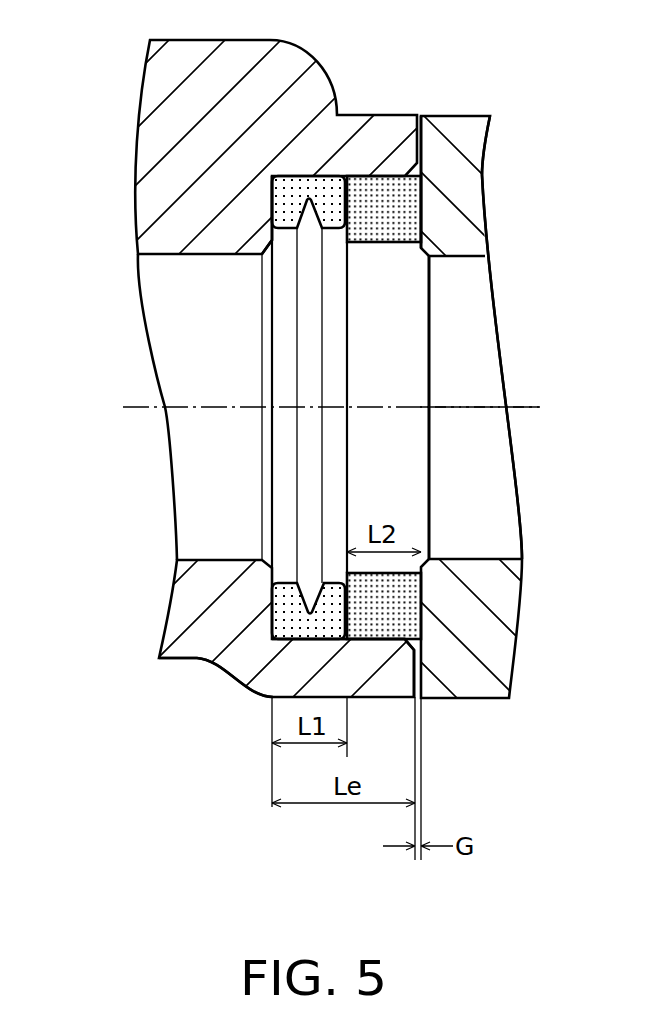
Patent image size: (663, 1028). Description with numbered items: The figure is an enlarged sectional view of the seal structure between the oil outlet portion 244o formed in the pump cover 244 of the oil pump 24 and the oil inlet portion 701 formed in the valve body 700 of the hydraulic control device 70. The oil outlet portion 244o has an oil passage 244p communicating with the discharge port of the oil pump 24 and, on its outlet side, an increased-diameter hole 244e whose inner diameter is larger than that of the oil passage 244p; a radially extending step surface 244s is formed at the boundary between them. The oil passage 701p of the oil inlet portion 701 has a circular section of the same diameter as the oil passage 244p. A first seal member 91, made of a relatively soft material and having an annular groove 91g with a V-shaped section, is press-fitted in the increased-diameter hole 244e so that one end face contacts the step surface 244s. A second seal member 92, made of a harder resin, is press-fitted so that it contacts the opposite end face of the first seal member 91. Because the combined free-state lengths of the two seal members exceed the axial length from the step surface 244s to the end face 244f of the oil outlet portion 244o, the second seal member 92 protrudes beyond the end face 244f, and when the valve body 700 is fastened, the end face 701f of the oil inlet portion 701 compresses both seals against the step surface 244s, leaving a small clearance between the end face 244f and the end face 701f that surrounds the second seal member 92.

The pump cover 244 is at (129, 148).
The oil passage 244p is at (238, 314).
The step surface 244s is at (273, 237).
The increased-diameter hole 244e is at (365, 636).
The oil outlet portion 244o is at (288, 666).
The end face of the oil outlet portion 244f is at (416, 672).
The first seal member 91 is at (287, 202).
The annular groove 91g is at (320, 594).
The second seal member 92 is at (383, 207).
The oil inlet portion 701 is at (448, 127).
The end face of the oil inlet portion 701f is at (419, 137).
The oil passage of the oil inlet portion 701p is at (508, 506).
The valve body 700 is at (483, 175).
The oil pump 24 is at (78, 418).
The hydraulic control device 70 is at (610, 417).